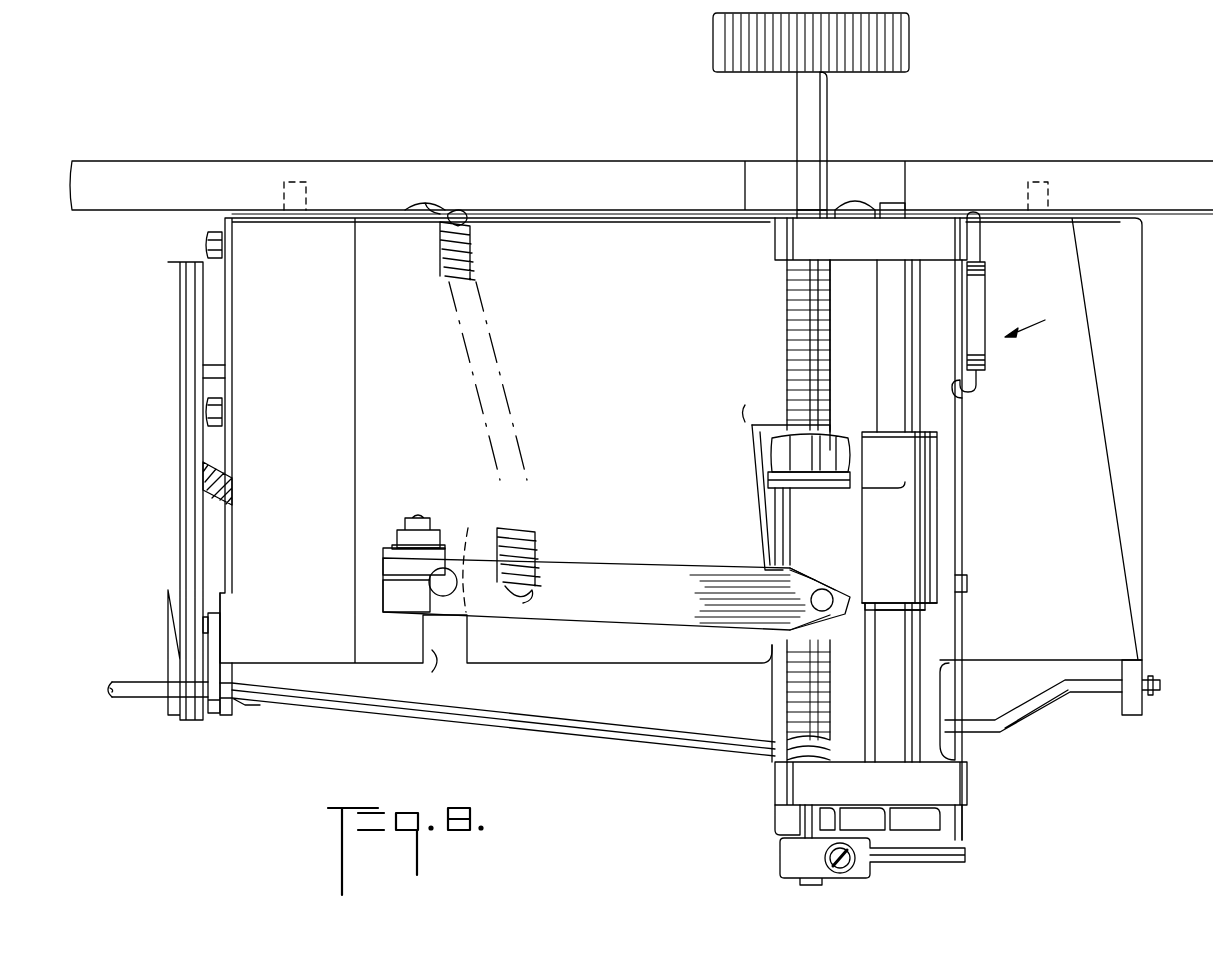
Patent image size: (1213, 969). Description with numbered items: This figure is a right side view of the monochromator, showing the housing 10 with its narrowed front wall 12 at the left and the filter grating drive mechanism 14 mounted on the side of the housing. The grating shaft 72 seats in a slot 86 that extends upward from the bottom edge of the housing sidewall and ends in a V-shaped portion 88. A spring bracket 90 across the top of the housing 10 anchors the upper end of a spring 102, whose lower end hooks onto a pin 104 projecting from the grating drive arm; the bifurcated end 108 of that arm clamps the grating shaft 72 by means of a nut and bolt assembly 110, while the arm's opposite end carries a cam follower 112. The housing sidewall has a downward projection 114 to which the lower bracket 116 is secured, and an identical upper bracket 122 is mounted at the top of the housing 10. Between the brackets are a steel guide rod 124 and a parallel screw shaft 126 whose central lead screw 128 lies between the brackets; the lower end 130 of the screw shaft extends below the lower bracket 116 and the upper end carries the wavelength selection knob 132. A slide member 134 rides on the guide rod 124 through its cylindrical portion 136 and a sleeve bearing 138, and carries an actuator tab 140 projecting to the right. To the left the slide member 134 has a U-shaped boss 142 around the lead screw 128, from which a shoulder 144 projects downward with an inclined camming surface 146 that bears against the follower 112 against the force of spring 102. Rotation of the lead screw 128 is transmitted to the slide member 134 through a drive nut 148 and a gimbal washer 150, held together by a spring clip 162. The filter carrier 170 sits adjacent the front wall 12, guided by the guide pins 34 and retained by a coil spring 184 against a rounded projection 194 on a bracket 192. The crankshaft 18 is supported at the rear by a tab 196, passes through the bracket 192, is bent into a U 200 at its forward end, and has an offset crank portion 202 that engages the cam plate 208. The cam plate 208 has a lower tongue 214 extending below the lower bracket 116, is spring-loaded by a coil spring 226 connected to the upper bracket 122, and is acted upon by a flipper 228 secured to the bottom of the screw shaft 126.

The housing 10 is at (620, 403).
The front wall 12 is at (228, 576).
The filter grating drive mechanism 14 is at (1037, 313).
The crankshaft 18 is at (548, 722).
The guide pins 34 is at (205, 378).
The grating shaft 72 is at (440, 590).
The slots 86 is at (420, 673).
The V-shaped upper ends 88 is at (470, 559).
The spring bracket 90 is at (425, 203).
The spring 102 is at (470, 268).
The pin 104 is at (515, 605).
The bifurcated end of drive arm 108 is at (385, 560).
The nut and bolt assembly 110 is at (418, 525).
The cam follower 112 is at (830, 608).
The downward projection 114 is at (782, 748).
The lower bracket 116 is at (972, 786).
The upper bracket 122 is at (775, 257).
The guide rod 124 is at (920, 630).
The screw shaft 126 is at (828, 126).
The lead screw 128 is at (790, 312).
The lower end of screw shaft 130 is at (800, 822).
The wavelength selection knob 132 is at (910, 58).
The slide member 134 is at (930, 528).
The cylindrical portion 136 is at (928, 470).
The sleeve bearing 138 is at (940, 435).
The actuator tab 140 is at (968, 583).
The U-shaped boss 142 is at (768, 512).
The shoulder 144 is at (838, 577).
The camming surface 146 is at (795, 575).
The drive nut 148 is at (775, 447).
The gimbal washer 150 is at (768, 480).
The spring clip 162 is at (773, 414).
The filter carrier 170 is at (170, 545).
The coil spring 184 is at (235, 468).
The bracket 192 is at (212, 655).
The rounded projection 194 is at (205, 627).
The tab 196 is at (1142, 705).
The U bend 200 is at (113, 697).
The offset crank portion 202 is at (1000, 735).
The cam plate 208 is at (962, 645).
The tongue 214 is at (962, 828).
The coil spring 226 is at (986, 280).
The flipper 228 is at (925, 862).